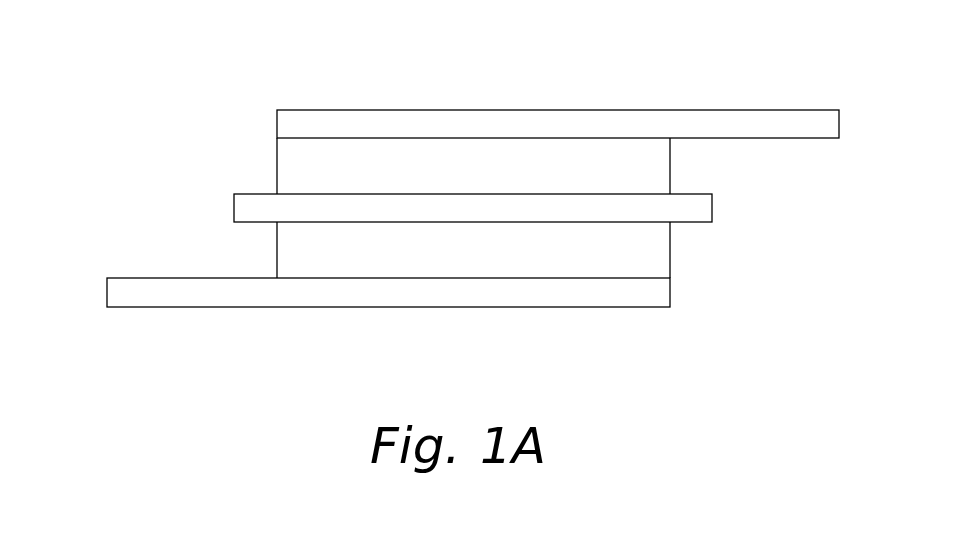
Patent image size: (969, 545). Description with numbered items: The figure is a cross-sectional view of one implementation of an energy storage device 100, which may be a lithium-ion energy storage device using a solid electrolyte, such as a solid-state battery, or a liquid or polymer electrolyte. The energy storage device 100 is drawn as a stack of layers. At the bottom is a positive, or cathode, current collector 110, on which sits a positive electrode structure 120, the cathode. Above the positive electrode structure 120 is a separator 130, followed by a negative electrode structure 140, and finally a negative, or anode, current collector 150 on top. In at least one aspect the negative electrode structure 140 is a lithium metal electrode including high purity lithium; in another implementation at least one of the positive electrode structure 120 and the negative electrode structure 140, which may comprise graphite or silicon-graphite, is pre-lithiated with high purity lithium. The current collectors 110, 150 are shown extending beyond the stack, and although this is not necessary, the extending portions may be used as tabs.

The energy storage device 100 is at (150, 40).
The positive current collector 110 is at (474, 308).
The positive electrode structure 120 is at (671, 248).
The separator 130 is at (233, 208).
The negative electrode structure 140 is at (671, 165).
The negative current collector 150 is at (473, 110).